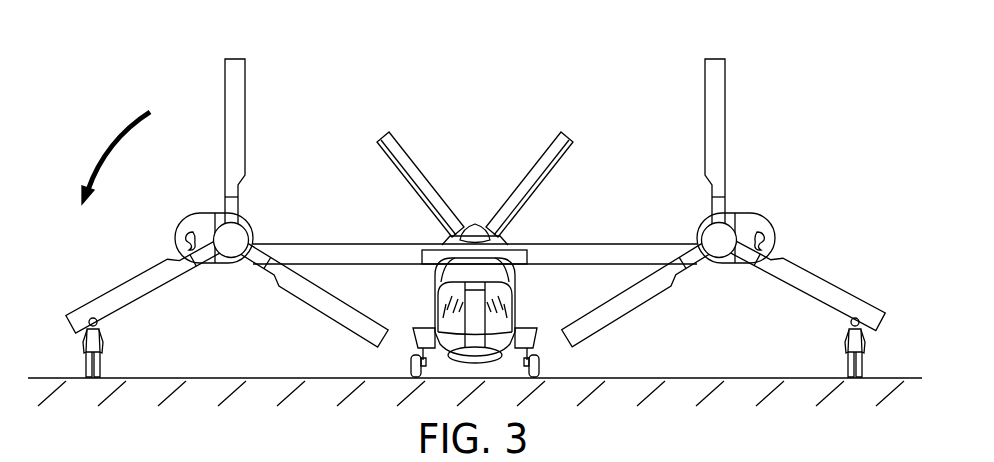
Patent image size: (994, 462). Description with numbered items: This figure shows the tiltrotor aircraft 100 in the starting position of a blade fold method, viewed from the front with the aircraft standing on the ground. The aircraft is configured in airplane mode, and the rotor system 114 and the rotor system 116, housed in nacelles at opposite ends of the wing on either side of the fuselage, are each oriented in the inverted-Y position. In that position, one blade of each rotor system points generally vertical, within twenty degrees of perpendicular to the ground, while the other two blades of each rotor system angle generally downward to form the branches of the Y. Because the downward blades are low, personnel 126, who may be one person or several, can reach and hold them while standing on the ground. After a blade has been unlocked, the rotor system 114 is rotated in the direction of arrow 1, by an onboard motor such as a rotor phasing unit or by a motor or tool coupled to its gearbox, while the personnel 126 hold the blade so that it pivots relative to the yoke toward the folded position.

The tiltrotor aircraft 100 is at (402, 90).
The rotor system 114 is at (220, 210).
The rotor system 116 is at (732, 210).
The arrow 1 is at (116, 158).
The personnel 126 is at (104, 362).